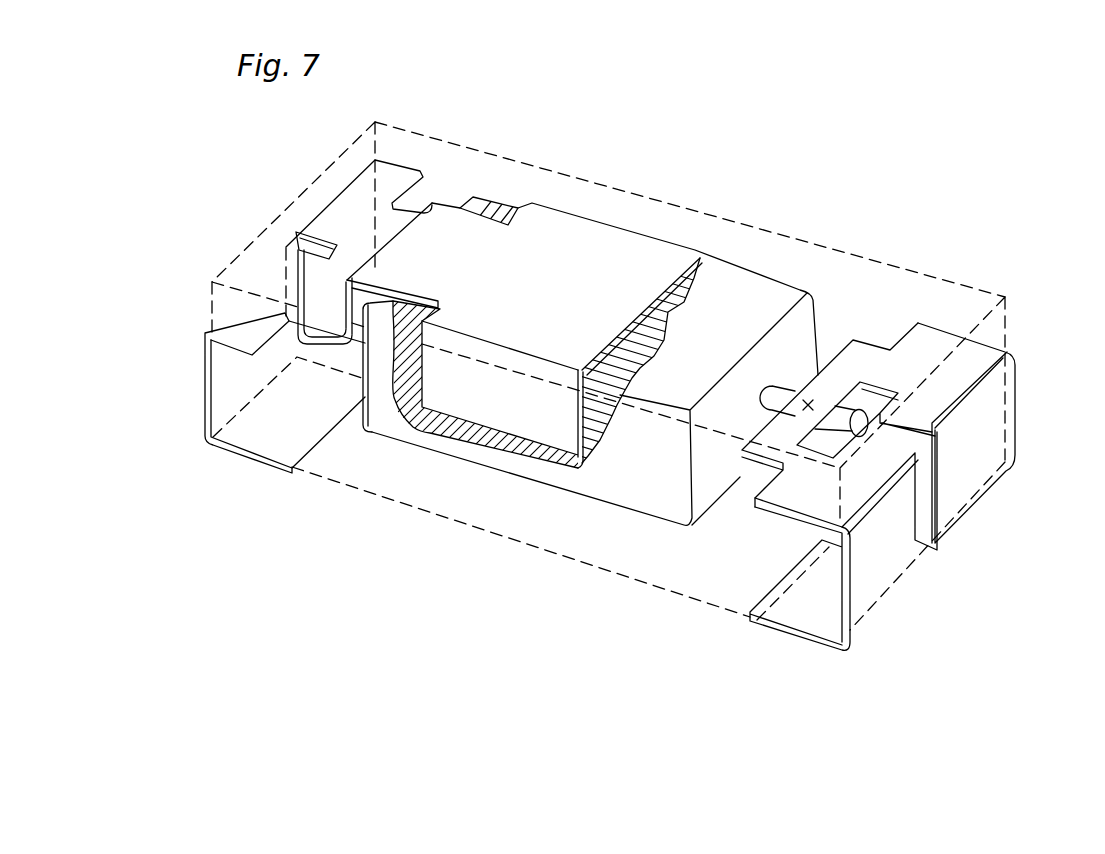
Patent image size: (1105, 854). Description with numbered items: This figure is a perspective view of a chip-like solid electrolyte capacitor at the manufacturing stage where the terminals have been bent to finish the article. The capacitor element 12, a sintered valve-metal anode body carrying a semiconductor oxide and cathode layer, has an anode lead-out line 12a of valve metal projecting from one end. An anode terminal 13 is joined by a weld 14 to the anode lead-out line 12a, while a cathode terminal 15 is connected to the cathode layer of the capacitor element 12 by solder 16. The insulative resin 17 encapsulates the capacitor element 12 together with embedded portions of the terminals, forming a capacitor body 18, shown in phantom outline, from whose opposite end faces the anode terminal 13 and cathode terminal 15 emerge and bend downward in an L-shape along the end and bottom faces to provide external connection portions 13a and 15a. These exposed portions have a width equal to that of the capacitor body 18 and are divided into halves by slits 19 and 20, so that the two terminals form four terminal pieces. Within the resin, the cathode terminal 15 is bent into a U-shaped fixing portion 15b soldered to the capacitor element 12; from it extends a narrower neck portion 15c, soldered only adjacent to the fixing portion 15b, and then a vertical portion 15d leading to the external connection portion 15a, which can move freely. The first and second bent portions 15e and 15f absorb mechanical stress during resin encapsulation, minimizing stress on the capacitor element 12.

The capacitor element 12 is at (760, 292).
The anode lead-out line 12a is at (777, 393).
The anode terminal 13 is at (1018, 408).
The external connection portion 13a is at (877, 587).
The weld 14 is at (813, 397).
The cathode terminal 15 is at (205, 370).
The external connection portion 15a is at (205, 403).
The U-shaped fixing portion 15b is at (518, 418).
The neck portion 15c is at (438, 215).
The vertical portion 15d is at (347, 330).
The first bent portion 15e is at (347, 280).
The second bent portion 15f is at (345, 333).
The solder 16 is at (403, 398).
The insulative resin 17 is at (653, 212).
The capacitor body 18 is at (734, 217).
The slit 19 is at (937, 505).
The slit 20 is at (348, 302).